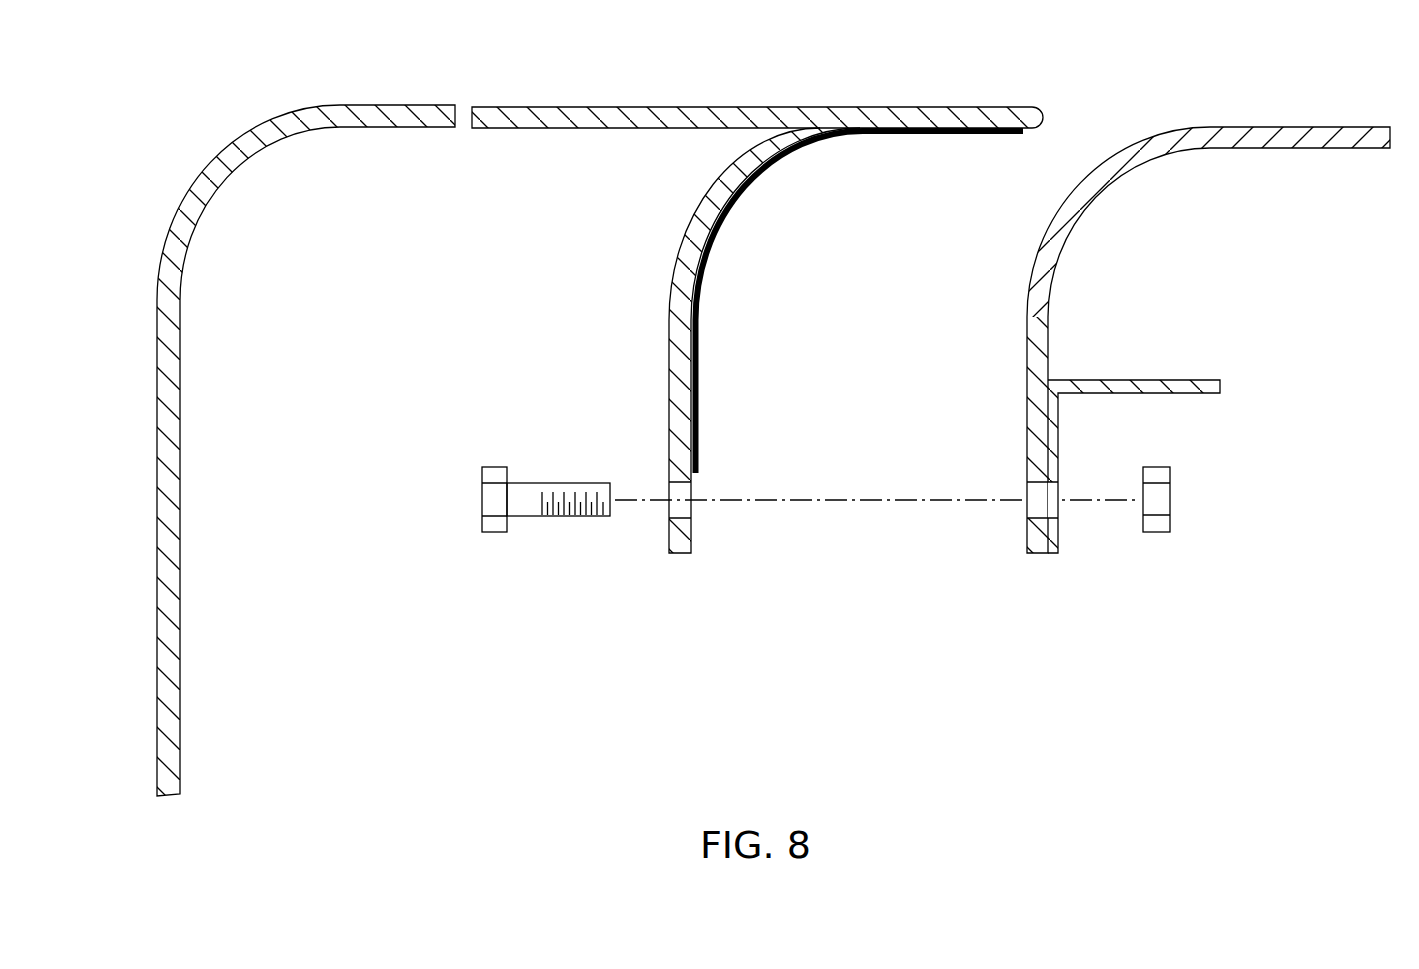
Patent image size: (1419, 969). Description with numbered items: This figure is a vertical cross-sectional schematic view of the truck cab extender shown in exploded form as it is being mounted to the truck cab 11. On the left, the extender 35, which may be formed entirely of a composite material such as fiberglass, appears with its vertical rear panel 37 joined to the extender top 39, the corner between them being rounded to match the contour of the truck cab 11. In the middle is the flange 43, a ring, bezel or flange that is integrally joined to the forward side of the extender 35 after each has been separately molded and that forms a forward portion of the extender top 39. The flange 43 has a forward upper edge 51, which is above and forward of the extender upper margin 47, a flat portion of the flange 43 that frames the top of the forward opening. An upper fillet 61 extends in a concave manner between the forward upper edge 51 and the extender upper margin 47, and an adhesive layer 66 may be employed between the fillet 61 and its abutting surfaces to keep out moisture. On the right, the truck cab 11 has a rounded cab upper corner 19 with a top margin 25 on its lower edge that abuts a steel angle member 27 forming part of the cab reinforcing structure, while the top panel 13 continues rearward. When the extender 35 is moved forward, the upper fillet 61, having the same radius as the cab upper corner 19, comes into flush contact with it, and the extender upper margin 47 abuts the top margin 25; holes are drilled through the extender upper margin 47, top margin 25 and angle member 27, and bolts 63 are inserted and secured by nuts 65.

The truck cab 11 is at (1173, 329).
The top panel 13 is at (1283, 127).
The cab upper corner 19 is at (1075, 197).
The top margin 25 is at (1030, 556).
The angle member 27 is at (1152, 380).
The extender 35 is at (245, 111).
The rear panel 37 is at (157, 382).
The top 39 is at (545, 107).
The flange 43 is at (900, 107).
The extender upper margin 47 is at (680, 556).
The forward upper edge 51 is at (1040, 120).
The upper fillet 61 is at (703, 200).
The bolts 63 is at (482, 501).
The nuts 65 is at (1172, 472).
The adhesive layer 66 is at (733, 256).